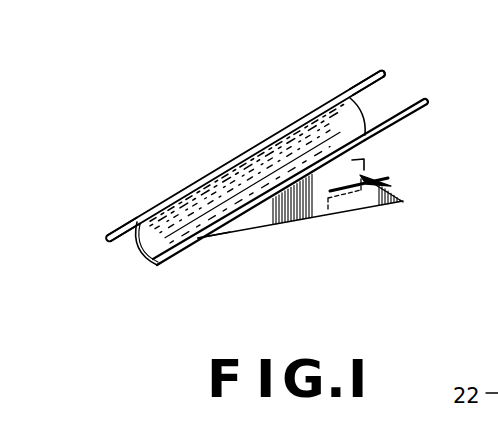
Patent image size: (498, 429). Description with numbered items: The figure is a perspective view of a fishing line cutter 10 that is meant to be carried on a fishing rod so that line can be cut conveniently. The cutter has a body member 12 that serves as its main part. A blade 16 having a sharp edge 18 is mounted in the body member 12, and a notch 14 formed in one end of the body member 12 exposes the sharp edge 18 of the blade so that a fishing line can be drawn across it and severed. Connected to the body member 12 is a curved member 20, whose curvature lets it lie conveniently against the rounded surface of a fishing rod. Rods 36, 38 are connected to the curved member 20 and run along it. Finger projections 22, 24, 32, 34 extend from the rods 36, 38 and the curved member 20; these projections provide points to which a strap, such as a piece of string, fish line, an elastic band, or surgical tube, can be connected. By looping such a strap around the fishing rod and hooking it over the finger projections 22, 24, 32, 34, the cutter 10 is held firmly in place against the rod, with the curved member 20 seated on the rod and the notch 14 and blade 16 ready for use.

The fishing line cutter 10 is at (290, 226).
The body member 12 is at (320, 213).
The notch 14 is at (357, 166).
The blade 16 is at (370, 158).
The sharp edge 18 is at (390, 205).
The curved member 20 is at (142, 252).
The finger projection 22 is at (107, 236).
The finger projection 24 is at (161, 268).
The finger projection 32 is at (379, 71).
The finger projection 34 is at (425, 99).
The rod 36 is at (234, 162).
The rod 38 is at (199, 239).